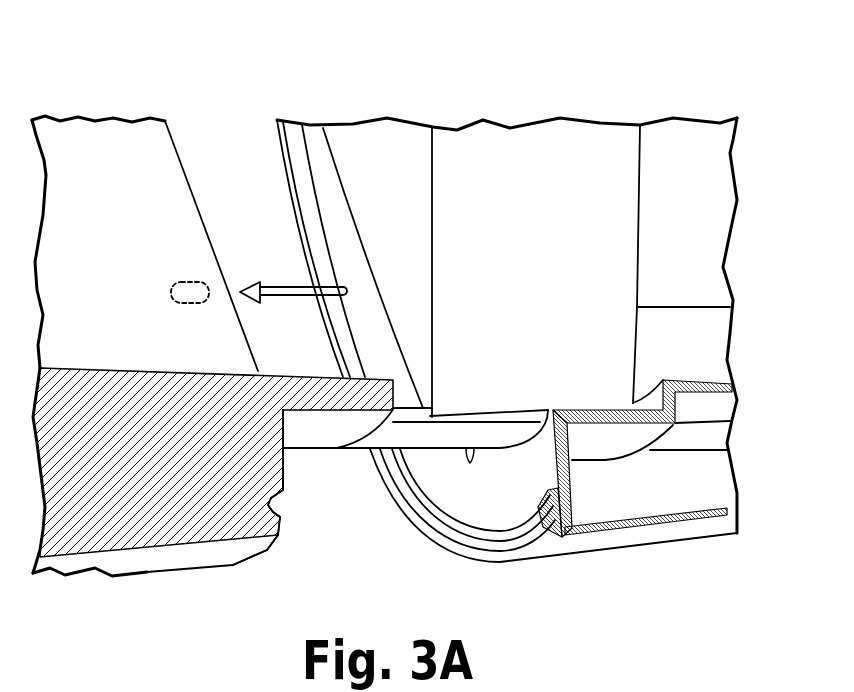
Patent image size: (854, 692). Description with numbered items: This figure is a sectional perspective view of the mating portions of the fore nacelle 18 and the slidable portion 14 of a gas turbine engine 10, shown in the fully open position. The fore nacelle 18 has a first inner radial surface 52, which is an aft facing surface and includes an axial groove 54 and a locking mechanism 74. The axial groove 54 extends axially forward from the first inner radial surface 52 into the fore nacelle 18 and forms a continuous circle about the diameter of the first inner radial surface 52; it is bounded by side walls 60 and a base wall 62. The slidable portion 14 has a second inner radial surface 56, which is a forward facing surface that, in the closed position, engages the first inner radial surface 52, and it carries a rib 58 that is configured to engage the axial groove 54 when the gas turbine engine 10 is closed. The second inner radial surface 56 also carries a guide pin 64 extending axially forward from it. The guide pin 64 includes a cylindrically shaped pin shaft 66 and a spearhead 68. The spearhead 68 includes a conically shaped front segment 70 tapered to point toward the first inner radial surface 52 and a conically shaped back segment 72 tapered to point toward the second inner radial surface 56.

The gas turbine engine 10 is at (113, 85).
The slidable portion 14 is at (710, 582).
The fore nacelle 18 is at (185, 587).
The first inner radial surface 52 is at (302, 481).
The axial groove 54 is at (305, 518).
The second inner radial surface 56 is at (440, 562).
The rib 58 is at (512, 528).
The side walls 60 is at (283, 517).
The base wall 62 is at (272, 503).
The guide pin 64 is at (281, 250).
The pin shaft 66 is at (291, 300).
The spearhead 68 is at (256, 286).
The front segment 70 is at (252, 293).
The back segment 72 is at (262, 297).
The locking mechanism 74 is at (171, 292).